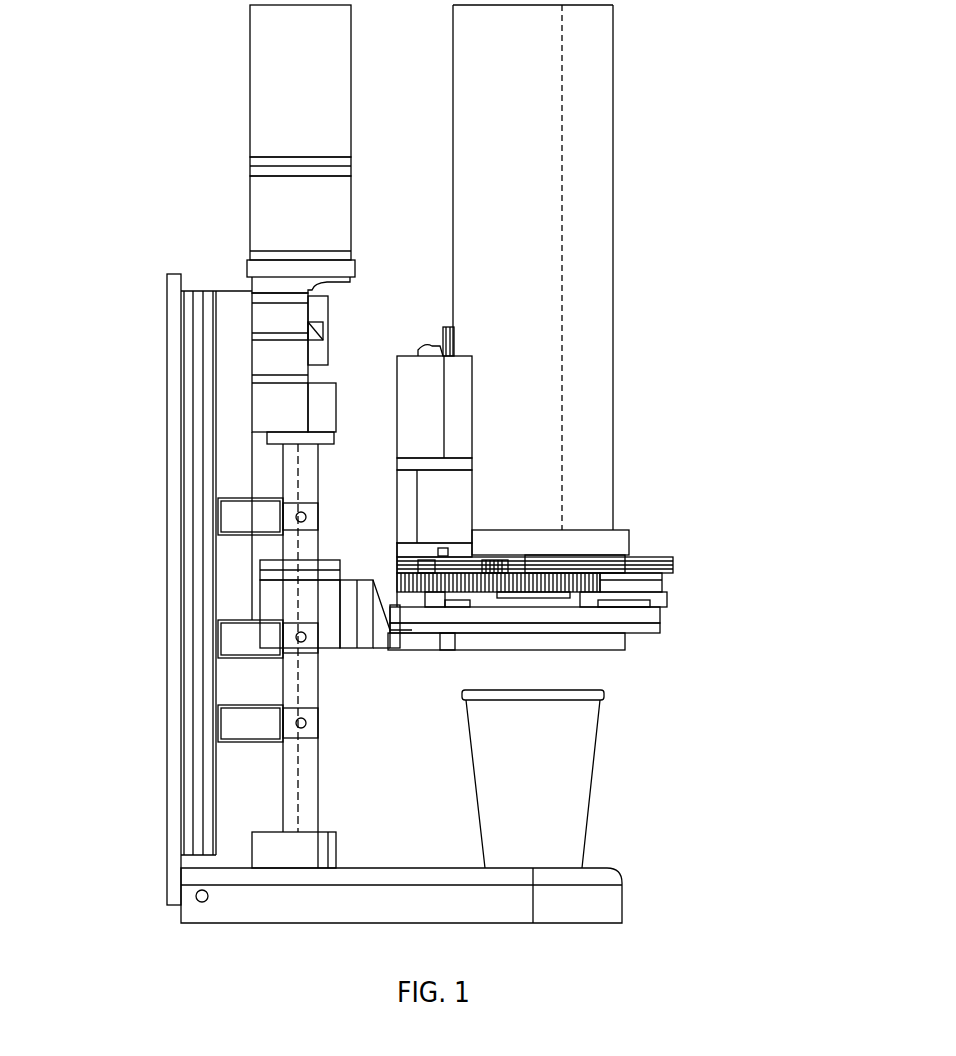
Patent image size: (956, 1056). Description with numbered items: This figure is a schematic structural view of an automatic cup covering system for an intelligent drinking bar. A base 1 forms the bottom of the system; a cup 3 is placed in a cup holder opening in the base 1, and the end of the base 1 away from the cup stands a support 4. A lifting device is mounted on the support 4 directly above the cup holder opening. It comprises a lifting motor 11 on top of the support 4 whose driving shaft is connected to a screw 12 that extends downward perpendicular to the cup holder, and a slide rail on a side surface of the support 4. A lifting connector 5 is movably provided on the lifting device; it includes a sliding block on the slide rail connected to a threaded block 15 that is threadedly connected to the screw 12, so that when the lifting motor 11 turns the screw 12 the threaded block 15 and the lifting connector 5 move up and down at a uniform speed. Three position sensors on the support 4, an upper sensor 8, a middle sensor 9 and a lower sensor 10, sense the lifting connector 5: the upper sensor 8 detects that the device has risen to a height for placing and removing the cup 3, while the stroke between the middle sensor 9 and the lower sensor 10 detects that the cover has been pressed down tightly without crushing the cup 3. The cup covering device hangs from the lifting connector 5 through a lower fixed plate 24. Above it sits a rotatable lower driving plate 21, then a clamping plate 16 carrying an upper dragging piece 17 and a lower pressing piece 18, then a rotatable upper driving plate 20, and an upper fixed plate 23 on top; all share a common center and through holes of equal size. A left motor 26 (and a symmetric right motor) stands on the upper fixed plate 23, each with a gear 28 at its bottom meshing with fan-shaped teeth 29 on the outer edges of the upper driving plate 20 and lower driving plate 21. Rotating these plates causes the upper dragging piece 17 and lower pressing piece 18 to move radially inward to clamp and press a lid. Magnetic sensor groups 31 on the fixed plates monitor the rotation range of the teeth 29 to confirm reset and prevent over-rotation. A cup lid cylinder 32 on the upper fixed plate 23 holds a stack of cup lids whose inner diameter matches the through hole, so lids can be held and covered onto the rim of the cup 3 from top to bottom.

The base 1 is at (603, 902).
The cup 3 is at (553, 828).
The support 4 is at (172, 770).
The lifting connector 5 is at (367, 631).
The upper sensor 8 is at (290, 507).
The middle sensor 9 is at (290, 635).
The lower sensor 10 is at (290, 722).
The lifting motor 11 is at (272, 97).
The screw 12 is at (290, 463).
The threaded block 15 is at (300, 590).
The clamping plate 16 is at (662, 595).
The upper dragging piece 17 is at (578, 572).
The lower pressing piece 18 is at (627, 605).
The upper driving plate 20 is at (640, 585).
The lower driving plate 21 is at (590, 618).
The upper fixed plate 23 is at (552, 562).
The lower fixed plate 24 is at (548, 643).
The left motor 26 is at (457, 437).
The gear 28 is at (374, 582).
The teeth 29 is at (492, 566).
The magnetic sensor groups 31 is at (537, 565).
The cup lid cylinder 32 is at (598, 222).